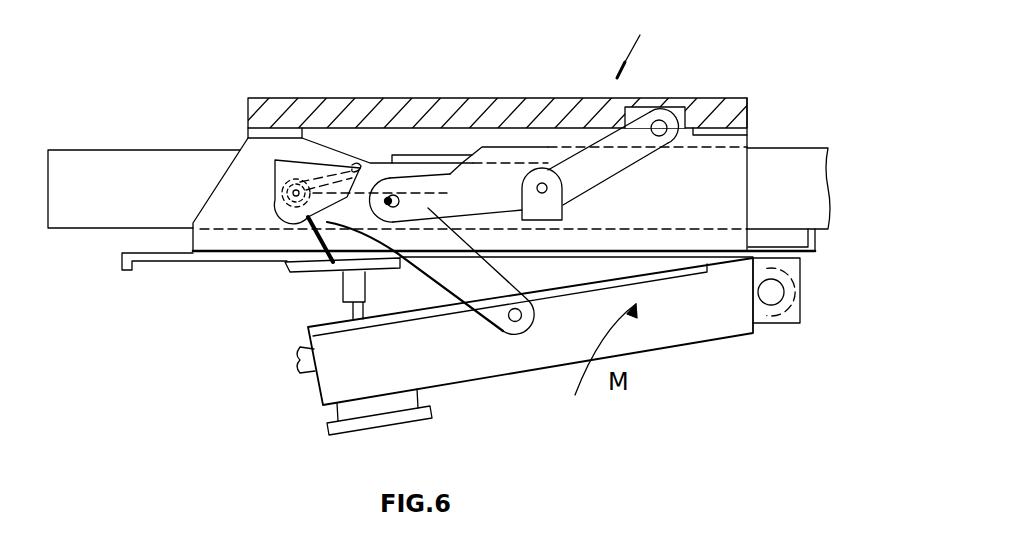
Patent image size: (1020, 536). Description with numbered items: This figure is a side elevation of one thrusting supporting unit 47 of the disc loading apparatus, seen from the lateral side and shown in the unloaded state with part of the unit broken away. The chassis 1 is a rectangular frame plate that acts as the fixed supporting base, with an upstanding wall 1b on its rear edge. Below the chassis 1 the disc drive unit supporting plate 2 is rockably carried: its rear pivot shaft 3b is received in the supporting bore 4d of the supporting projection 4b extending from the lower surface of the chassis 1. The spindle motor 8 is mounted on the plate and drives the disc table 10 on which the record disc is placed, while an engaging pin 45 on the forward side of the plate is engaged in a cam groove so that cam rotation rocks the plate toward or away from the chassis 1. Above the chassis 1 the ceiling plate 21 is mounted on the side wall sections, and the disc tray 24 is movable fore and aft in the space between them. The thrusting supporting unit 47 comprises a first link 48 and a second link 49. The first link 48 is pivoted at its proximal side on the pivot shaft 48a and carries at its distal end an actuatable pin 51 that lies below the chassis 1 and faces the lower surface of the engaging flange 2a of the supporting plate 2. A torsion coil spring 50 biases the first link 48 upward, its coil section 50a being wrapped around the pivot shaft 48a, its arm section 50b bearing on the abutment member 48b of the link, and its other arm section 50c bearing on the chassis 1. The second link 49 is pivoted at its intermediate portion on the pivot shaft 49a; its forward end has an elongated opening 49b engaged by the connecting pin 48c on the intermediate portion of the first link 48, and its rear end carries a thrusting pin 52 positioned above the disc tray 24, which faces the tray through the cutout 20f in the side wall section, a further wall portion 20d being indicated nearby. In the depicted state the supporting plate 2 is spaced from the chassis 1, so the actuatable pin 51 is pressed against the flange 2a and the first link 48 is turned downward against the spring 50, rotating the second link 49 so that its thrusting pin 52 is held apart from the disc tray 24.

The chassis 1 is at (215, 262).
The upstanding wall 1b is at (818, 245).
The disc drive unit supporting plate 2 is at (531, 362).
The engaging flanges 2a is at (657, 283).
The pivot shaft 3b is at (777, 297).
The supporting projection 4b is at (793, 324).
The supporting bore 4d is at (790, 290).
The spindle motor 8 is at (428, 412).
The disc table 10 is at (300, 268).
The housing guide plate 20d is at (433, 150).
The cutout 20f is at (693, 130).
The ceiling plate 21 is at (522, 98).
The disc tray 24 is at (153, 162).
The engaging pin 45 is at (297, 363).
The thrusting supporting unit 47 is at (634, 41).
The first link 48 is at (443, 275).
The pivot shaft 48a is at (292, 193).
The abutment member 48b is at (290, 165).
The connecting pin 48c is at (403, 206).
The second link 49 is at (609, 181).
The pivot shaft 49a is at (550, 190).
The elongated opening 49b is at (417, 198).
The torsion coil spring 50 is at (322, 173).
The coil section 50a is at (298, 206).
The arm section 50b is at (358, 166).
The arm section 50c is at (288, 252).
The actuatable pin 51 is at (521, 317).
The thrusting pin 52 is at (667, 115).